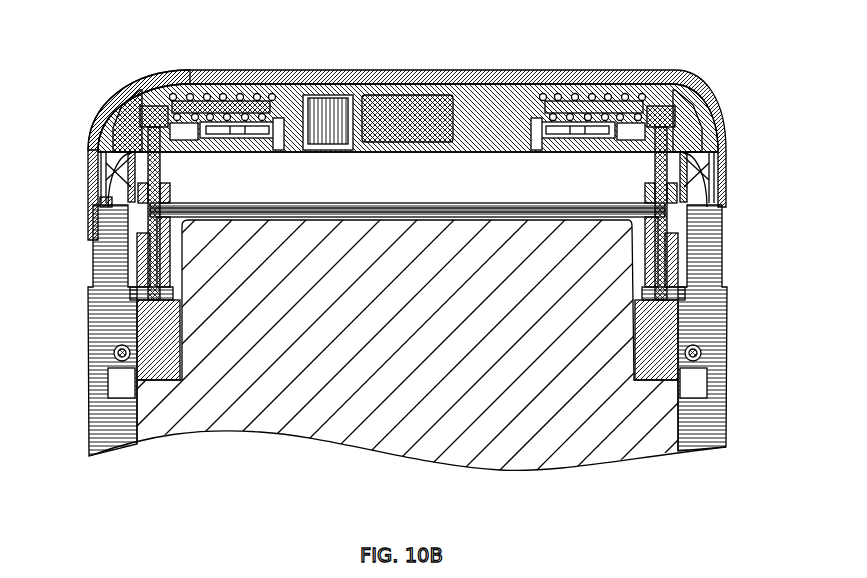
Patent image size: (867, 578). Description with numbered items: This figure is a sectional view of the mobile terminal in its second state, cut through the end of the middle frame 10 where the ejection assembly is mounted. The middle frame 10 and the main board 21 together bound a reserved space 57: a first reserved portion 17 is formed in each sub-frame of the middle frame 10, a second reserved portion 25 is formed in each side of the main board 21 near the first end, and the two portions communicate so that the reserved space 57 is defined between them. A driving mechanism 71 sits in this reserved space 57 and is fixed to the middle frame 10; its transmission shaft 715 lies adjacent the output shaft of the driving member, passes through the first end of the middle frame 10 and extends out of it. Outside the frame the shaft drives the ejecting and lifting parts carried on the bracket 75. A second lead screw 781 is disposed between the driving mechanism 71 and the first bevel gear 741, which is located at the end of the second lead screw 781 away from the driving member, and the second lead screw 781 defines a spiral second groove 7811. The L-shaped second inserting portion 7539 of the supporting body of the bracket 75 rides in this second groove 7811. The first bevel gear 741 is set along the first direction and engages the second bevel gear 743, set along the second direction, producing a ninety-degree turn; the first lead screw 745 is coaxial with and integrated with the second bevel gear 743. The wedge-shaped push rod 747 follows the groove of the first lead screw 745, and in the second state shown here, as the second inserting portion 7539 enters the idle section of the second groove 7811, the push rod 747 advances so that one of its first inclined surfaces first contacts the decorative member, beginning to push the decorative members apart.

The middle frame 10 is at (726, 198).
The first reserved portion 17 is at (696, 340).
The main board 21 is at (682, 417).
The second reserved portion 25 is at (688, 263).
The reserved space 57 is at (711, 298).
The driving mechanism 71 is at (112, 314).
The bracket 75 is at (118, 100).
The transmission shaft 715 is at (108, 107).
The first bevel gear 741 is at (145, 80).
The second bevel gear 743 is at (177, 97).
The first lead screw 745 is at (213, 82).
The push rod 747 is at (268, 95).
The second lead screw 781 is at (110, 199).
The second groove 7811 is at (128, 220).
The second inserting portion 7539 is at (112, 152).